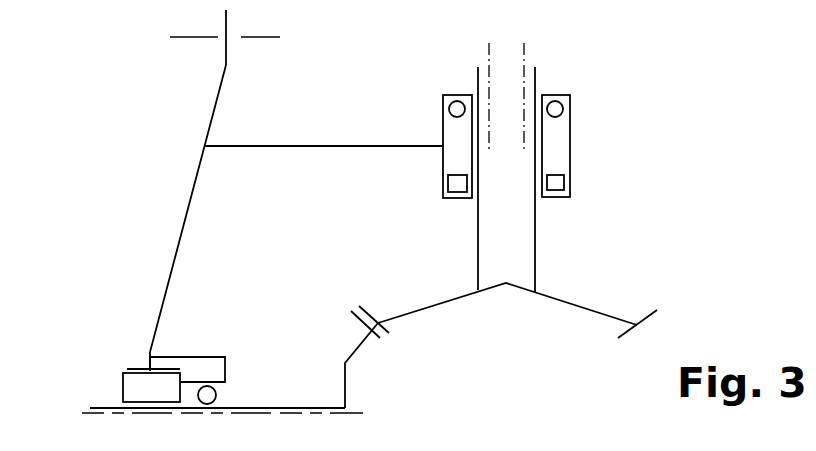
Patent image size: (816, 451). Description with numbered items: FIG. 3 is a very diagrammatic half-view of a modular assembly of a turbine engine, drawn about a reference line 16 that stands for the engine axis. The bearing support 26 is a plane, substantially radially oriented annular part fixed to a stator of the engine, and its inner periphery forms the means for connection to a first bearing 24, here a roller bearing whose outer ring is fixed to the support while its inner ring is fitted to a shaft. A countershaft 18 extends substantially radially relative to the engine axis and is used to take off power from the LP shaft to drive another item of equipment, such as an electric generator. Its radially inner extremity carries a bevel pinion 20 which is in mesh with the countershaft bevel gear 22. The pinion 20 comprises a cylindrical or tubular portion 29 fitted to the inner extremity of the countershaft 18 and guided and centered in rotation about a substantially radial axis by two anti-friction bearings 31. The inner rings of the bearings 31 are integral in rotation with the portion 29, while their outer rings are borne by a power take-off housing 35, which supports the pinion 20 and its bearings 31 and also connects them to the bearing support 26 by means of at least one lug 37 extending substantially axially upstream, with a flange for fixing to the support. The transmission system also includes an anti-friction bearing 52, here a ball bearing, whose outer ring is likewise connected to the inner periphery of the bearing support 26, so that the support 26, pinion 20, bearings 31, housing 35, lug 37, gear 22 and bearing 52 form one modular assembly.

The ground surface 16 is at (353, 412).
The countershaft 18 is at (523, 57).
The bevel pinion 20 is at (443, 303).
The countershaft bevel gear 22 is at (347, 372).
The bearing 24 is at (95, 387).
The bearing support 26 is at (187, 213).
The cylindrical portion 29 is at (537, 233).
The anti-friction bearings 31 is at (555, 117).
The power take-off housing 35 is at (572, 118).
The lug 37 is at (305, 146).
The anti-friction bearing 52 is at (220, 344).